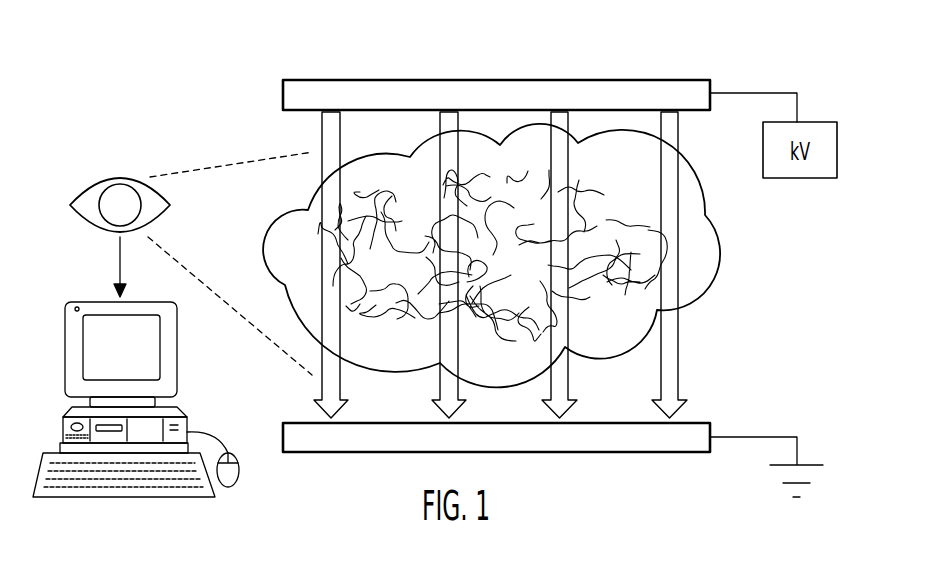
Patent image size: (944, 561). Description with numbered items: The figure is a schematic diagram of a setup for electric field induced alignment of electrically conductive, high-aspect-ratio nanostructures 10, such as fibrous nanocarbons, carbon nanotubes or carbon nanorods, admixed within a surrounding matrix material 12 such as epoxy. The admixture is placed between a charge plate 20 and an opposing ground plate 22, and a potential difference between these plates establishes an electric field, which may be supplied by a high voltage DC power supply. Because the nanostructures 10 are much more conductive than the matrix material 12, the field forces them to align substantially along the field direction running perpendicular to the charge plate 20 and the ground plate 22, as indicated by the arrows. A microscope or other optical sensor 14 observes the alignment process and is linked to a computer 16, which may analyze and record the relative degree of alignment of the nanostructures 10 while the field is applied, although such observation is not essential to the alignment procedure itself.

The nanostructures 10 is at (308, 209).
The matrix material 12 is at (707, 216).
The optical sensor 14 is at (108, 178).
The computer 16 is at (65, 333).
The charge plate 20 is at (283, 95).
The ground plate 22 is at (283, 437).